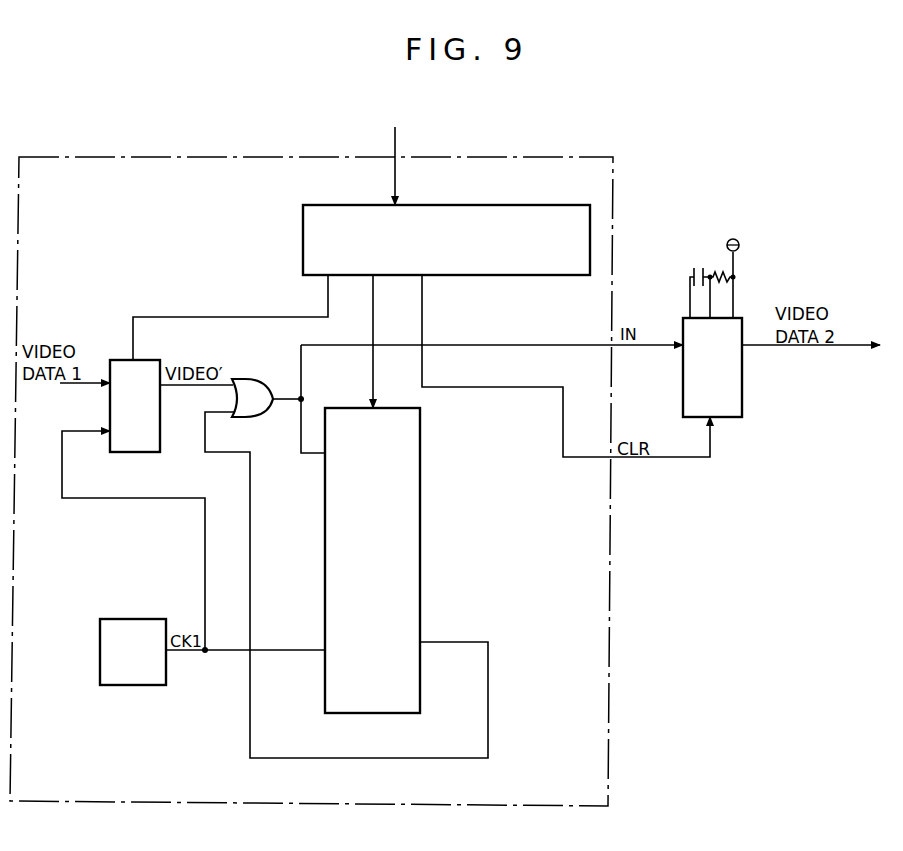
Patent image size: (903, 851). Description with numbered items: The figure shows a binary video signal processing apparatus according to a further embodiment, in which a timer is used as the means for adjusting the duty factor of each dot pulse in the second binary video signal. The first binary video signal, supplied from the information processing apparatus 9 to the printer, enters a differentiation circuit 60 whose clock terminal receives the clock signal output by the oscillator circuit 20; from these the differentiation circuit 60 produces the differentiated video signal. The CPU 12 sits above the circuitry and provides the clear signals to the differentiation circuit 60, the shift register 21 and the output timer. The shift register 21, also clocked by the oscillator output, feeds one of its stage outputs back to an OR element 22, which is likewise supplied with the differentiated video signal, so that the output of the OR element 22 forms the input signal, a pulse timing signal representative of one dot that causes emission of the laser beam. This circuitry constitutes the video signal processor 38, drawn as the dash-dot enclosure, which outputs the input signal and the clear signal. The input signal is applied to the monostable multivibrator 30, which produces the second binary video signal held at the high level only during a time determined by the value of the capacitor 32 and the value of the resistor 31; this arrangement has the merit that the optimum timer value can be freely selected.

The information processing apparatus 9 is at (316, 140).
The CPU 12 is at (350, 203).
The oscillator circuit 20 is at (137, 686).
The shift register 21 is at (422, 549).
The OR element 22 is at (236, 378).
The monostable multivibrator 30 is at (735, 418).
The resistor 31 is at (722, 275).
The capacitor 32 is at (690, 270).
The video signal processor 38 is at (608, 638).
The differentiation circuit 60 is at (116, 360).